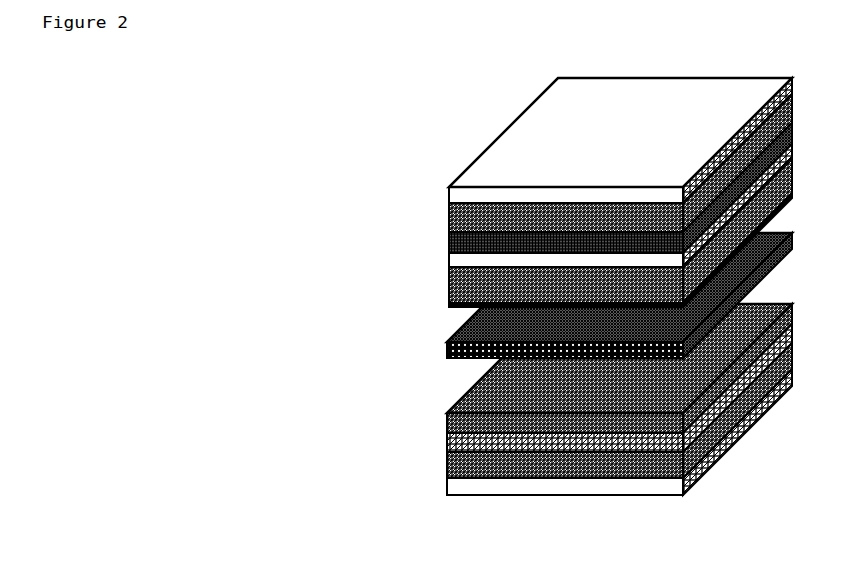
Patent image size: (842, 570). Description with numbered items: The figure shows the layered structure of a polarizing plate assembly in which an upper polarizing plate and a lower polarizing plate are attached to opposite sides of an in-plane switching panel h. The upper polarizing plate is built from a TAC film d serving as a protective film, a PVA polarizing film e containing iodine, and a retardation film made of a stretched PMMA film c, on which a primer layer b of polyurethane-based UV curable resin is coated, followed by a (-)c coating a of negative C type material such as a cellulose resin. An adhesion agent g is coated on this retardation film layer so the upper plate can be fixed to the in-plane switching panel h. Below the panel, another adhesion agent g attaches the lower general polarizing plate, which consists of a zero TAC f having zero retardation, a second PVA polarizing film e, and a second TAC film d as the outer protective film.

The (-)c coating a is at (452, 285).
The primer layer b is at (452, 260).
The stretched PMMA film c is at (452, 242).
The TAC film d is at (476, 166).
The PVA polarizing film e is at (453, 207).
The zero TAC f is at (450, 440).
The adhesion agent g is at (450, 304).
The in-plane switching panel h is at (447, 349).